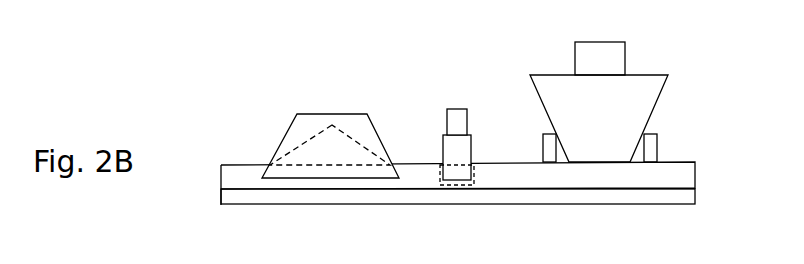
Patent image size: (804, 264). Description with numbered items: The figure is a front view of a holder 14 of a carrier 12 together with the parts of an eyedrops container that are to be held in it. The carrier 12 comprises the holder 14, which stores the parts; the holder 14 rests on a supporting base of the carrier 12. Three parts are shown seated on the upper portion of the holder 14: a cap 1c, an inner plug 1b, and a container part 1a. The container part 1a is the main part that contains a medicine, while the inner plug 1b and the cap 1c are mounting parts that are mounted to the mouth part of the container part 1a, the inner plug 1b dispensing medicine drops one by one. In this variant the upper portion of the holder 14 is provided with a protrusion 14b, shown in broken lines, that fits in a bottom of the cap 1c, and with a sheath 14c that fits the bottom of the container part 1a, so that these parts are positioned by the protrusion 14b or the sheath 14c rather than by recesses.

The carrier 12 is at (696, 201).
The holder 14 is at (696, 161).
The protrusion 14b is at (311, 146).
The sheath 14c is at (658, 140).
The container part 1a is at (657, 74).
The inner plug 1b is at (458, 109).
The cap 1c is at (347, 113).